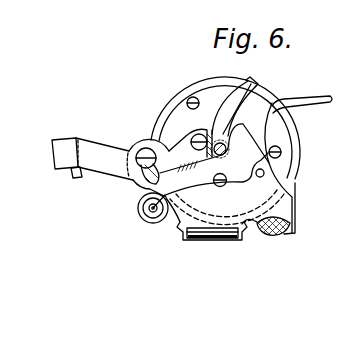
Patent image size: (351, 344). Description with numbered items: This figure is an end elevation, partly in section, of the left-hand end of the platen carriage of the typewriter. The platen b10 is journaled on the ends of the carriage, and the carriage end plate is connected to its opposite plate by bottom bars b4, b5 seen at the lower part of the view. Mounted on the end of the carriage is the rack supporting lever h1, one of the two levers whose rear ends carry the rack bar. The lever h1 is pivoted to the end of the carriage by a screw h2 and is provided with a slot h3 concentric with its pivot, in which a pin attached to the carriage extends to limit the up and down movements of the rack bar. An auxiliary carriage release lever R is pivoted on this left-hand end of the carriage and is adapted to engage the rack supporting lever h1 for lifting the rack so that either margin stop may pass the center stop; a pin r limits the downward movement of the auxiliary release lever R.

The platen b10 is at (207, 92).
The supporting lever h1 is at (108, 148).
The screw h2 is at (195, 136).
The slot h3 is at (158, 176).
The auxiliary carriage release lever R is at (292, 136).
The pin r is at (259, 181).
The bottom bar b4 is at (193, 234).
The bottom bar b5 is at (248, 235).